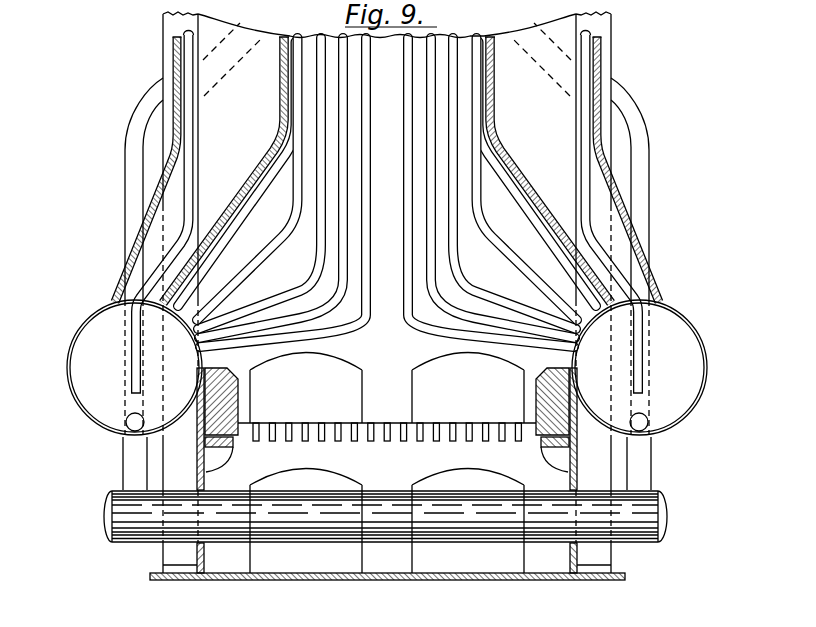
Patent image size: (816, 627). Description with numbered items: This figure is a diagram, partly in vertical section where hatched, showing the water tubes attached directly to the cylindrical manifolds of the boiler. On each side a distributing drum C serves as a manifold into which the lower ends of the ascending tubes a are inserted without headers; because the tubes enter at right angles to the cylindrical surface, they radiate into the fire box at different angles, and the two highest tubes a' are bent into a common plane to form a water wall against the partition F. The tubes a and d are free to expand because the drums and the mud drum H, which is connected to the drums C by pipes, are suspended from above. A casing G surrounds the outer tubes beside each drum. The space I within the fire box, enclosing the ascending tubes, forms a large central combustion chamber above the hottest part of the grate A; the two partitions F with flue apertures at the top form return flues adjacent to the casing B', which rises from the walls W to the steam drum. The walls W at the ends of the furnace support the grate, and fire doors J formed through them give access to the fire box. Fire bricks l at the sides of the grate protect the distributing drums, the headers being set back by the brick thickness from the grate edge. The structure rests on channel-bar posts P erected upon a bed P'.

The casing B' is at (384, 169).
The partition F is at (280, 83).
The tube d is at (194, 108).
The casing G is at (125, 212).
The bent tubes a' is at (387, 179).
The ascending tubes a is at (387, 192).
The combustion chamber I is at (381, 135).
The walls W is at (380, 345).
The distributing drum C is at (382, 367).
The fire bricks l is at (238, 398).
The fire doors J is at (387, 463).
The grate A is at (399, 445).
The mud drum H is at (368, 516).
The channel-bar posts P is at (383, 292).
The bed P' is at (387, 593).